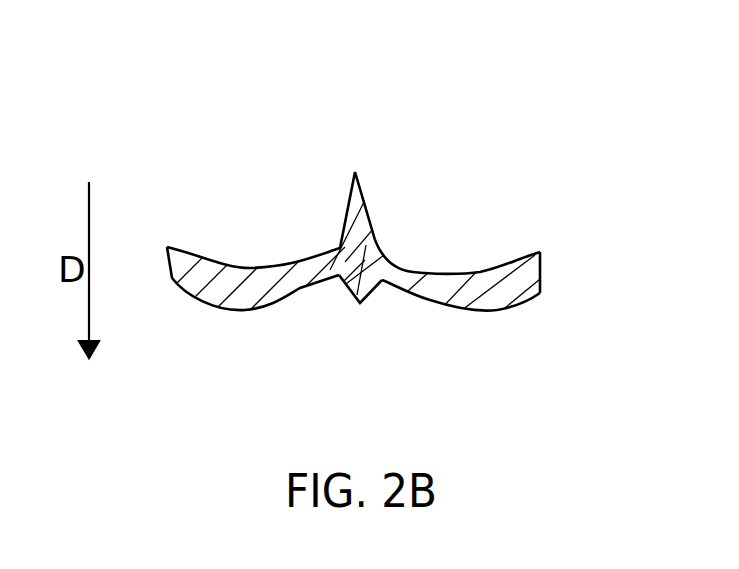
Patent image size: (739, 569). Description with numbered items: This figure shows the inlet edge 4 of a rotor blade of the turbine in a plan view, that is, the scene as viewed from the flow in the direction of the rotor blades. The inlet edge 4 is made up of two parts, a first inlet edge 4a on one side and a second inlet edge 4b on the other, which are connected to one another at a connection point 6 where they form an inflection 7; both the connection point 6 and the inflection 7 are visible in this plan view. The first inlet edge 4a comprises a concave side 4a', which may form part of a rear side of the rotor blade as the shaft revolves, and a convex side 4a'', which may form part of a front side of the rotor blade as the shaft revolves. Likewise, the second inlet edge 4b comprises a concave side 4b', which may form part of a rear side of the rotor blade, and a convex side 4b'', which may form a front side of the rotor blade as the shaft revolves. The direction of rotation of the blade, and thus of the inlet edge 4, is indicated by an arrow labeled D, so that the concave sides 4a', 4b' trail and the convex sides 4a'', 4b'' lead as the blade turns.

The inlet edge 4 is at (419, 133).
The first inlet edge 4a is at (257, 276).
The concave side of first inlet edge 4a' is at (253, 211).
The convex side of first inlet edge 4a'' is at (244, 336).
The second inlet edge 4b is at (460, 278).
The concave side of second inlet edge 4b' is at (457, 216).
The convex side of second inlet edge 4b'' is at (461, 339).
The connection point 6 is at (363, 300).
The inflection 7 is at (349, 336).